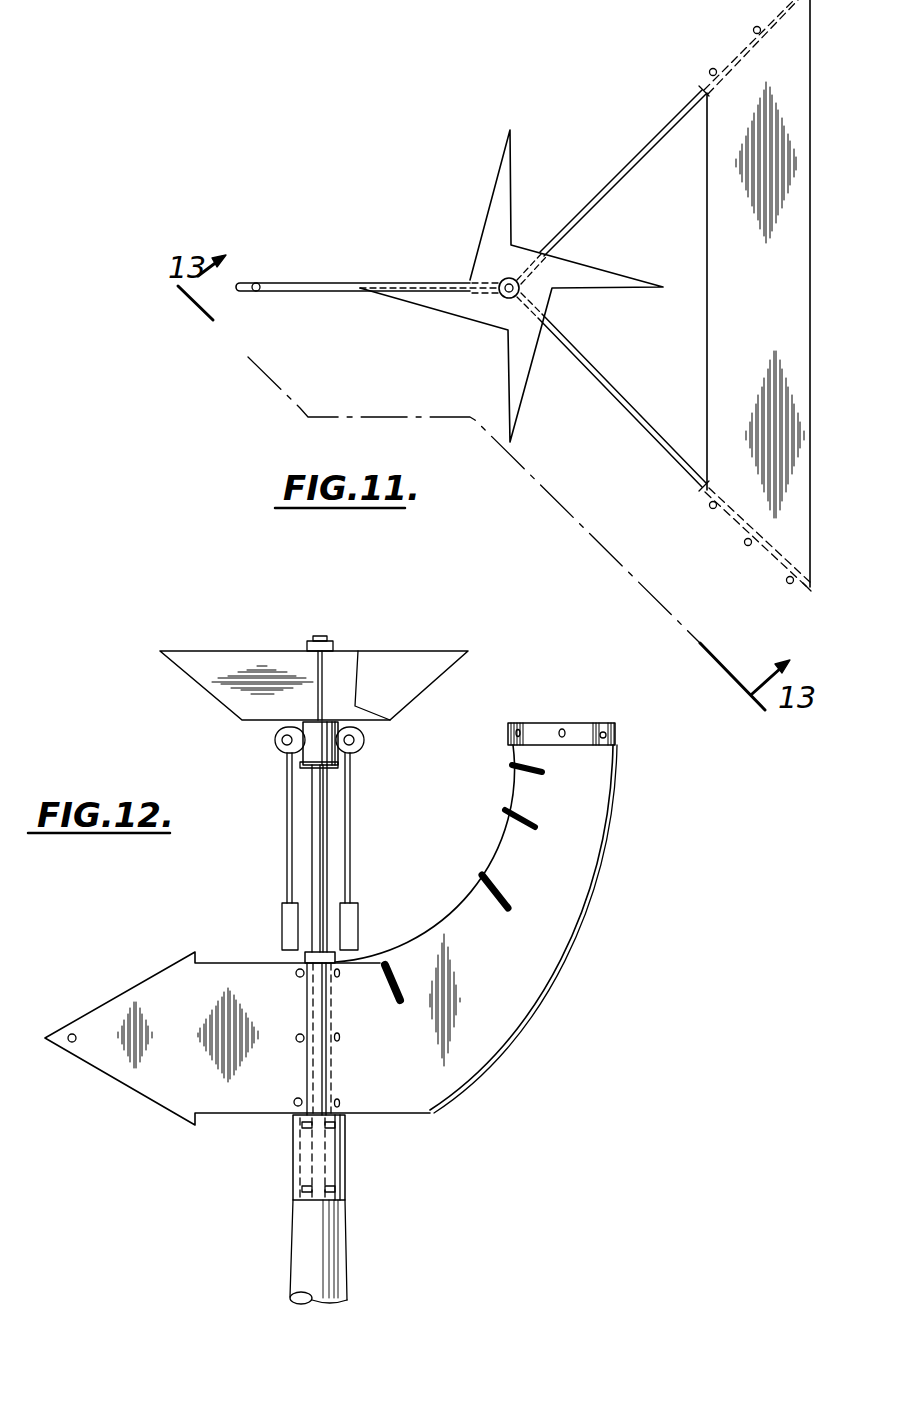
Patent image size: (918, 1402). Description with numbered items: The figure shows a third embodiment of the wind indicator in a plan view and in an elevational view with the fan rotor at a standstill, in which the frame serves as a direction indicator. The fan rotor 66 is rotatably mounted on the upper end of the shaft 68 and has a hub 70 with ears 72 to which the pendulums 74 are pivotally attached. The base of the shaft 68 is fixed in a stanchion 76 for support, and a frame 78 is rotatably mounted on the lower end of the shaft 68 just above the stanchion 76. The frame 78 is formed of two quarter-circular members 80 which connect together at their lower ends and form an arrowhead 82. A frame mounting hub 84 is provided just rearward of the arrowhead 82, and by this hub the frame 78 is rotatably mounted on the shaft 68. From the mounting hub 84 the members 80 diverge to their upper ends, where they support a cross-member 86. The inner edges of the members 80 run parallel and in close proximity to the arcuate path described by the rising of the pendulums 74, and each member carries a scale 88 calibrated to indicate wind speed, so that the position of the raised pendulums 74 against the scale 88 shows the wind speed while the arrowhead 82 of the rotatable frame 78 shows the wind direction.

In FIG. 11, the fan rotor 66 is at (503, 187).
In FIG. 12, the fan rotor 66 is at (268, 662).
In FIG. 11, the shaft 68 is at (503, 297).
In FIG. 12, the shaft 68 is at (320, 867).
In FIG. 12, the hub 70 is at (303, 768).
In FIG. 12, the ears 72 is at (282, 739).
In FIG. 12, the pendulums 74 is at (287, 832).
In FIG. 12, the stanchion 76 is at (337, 1260).
In FIG. 11, the frame 78 is at (802, 589).
In FIG. 12, the frame 78 is at (617, 723).
In FIG. 11, the quarter-circular members 80 is at (625, 172).
In FIG. 12, the quarter-circular members 80 is at (582, 937).
In FIG. 11, the arrowhead 82 is at (267, 294).
In FIG. 12, the arrowhead 82 is at (110, 1053).
In FIG. 12, the frame mounting hub 84 is at (305, 957).
In FIG. 11, the cross-member 86 is at (790, 267).
In FIG. 12, the cross-member 86 is at (562, 722).
In FIG. 12, the scale 88 is at (465, 903).